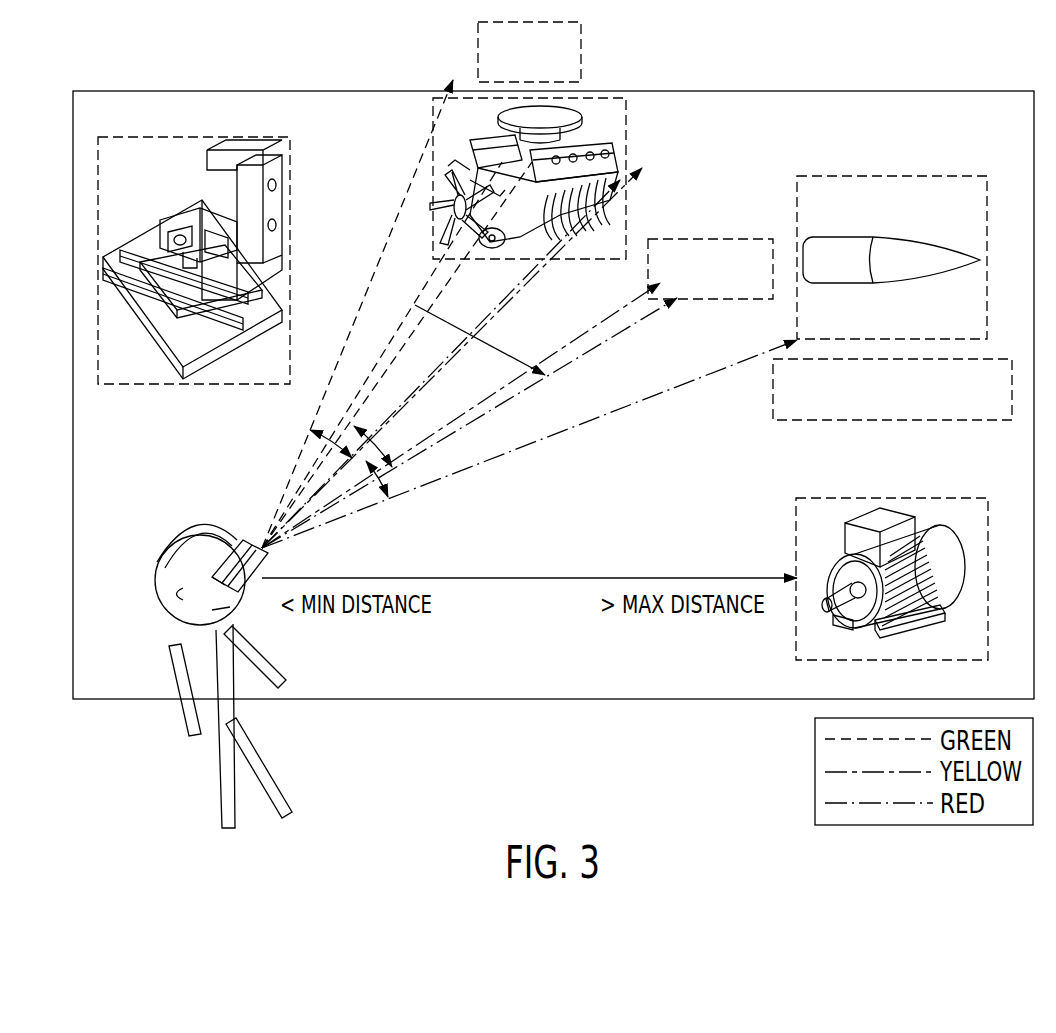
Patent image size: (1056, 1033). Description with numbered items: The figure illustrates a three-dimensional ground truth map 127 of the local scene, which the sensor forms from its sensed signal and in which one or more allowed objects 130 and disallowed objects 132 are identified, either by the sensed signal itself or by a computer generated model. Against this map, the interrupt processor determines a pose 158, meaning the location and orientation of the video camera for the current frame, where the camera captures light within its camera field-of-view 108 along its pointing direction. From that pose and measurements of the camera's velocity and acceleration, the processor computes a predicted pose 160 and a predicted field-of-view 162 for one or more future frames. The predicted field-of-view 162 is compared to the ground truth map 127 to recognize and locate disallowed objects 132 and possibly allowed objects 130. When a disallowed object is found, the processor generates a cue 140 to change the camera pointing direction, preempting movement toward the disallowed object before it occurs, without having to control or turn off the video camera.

The camera field-of-view 108 is at (323, 427).
The three-dimensional ground truth map 127 is at (752, 91).
The allowed objects 130 is at (195, 137).
The disallowed objects 132 is at (895, 176).
The cue 140 is at (583, 50).
The pose 158 is at (283, 497).
The predicted pose 160 is at (445, 358).
The predicted field-of-view 162 is at (390, 445).